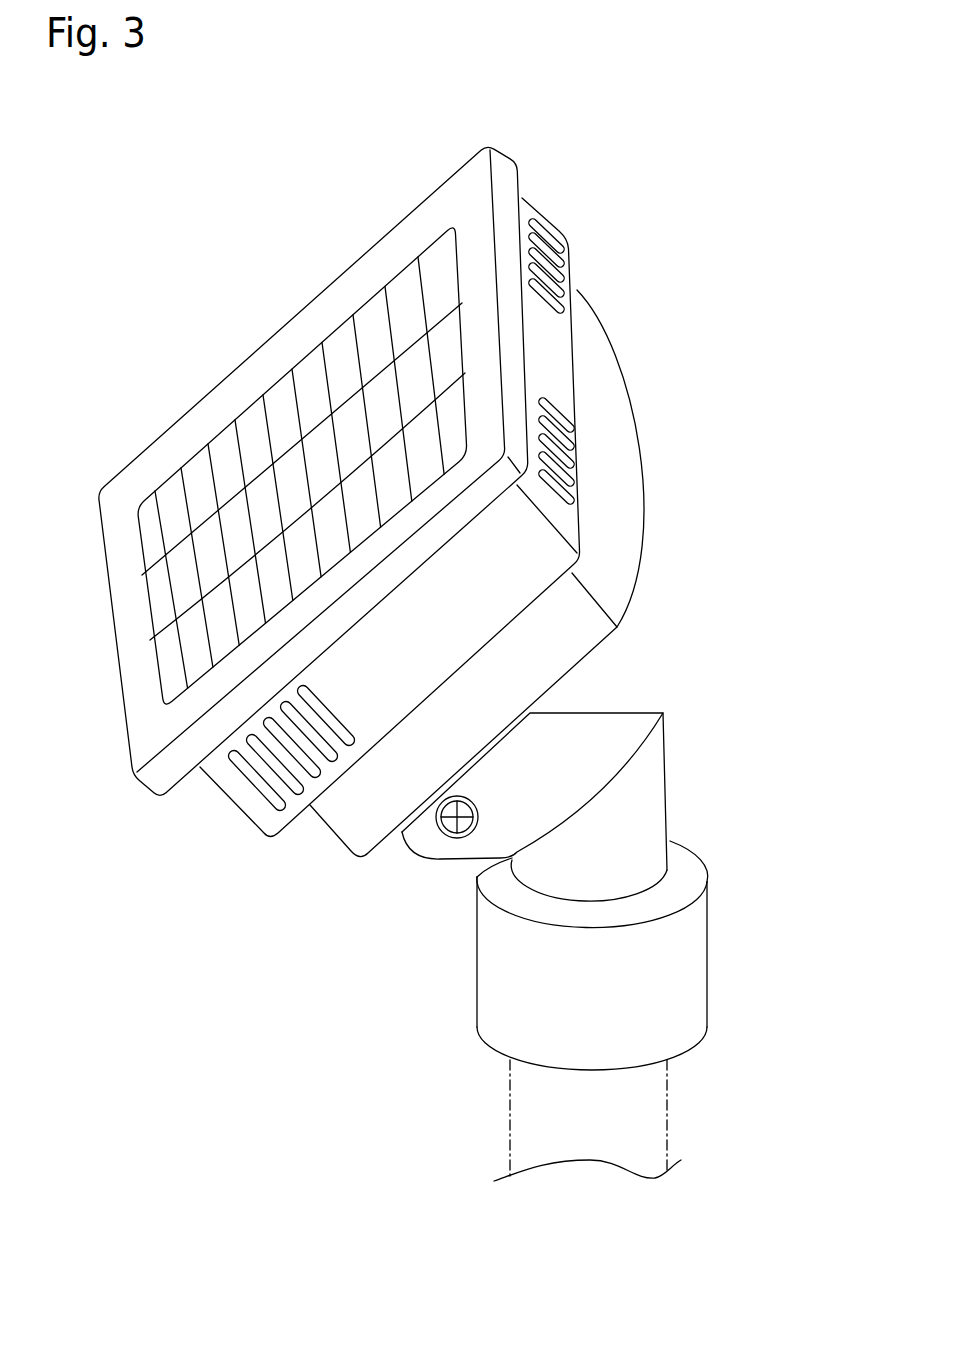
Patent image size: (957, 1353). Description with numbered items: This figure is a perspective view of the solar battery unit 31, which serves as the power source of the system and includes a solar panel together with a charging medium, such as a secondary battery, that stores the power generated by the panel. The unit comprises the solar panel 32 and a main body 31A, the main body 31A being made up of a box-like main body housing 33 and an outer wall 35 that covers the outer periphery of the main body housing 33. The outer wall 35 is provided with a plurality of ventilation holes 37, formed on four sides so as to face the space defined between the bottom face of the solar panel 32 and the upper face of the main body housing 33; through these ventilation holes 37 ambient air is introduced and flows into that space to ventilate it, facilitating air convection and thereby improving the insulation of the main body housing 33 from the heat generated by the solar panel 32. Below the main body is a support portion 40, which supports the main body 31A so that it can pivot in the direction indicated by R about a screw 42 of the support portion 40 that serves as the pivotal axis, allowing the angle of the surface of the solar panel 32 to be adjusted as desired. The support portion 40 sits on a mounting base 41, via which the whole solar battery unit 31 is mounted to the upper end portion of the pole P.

The solar battery unit 31 is at (409, 499).
The main body 31A is at (623, 371).
The solar panel 32 is at (218, 403).
The main body housing 33 is at (522, 573).
The outer wall 35 is at (542, 345).
The ventilation holes 37 is at (548, 237).
The support portion 40 is at (617, 737).
The mounting base 41 is at (683, 963).
The screw 42 is at (446, 832).
The pole P is at (540, 1113).
The pivot direction R is at (447, 108).